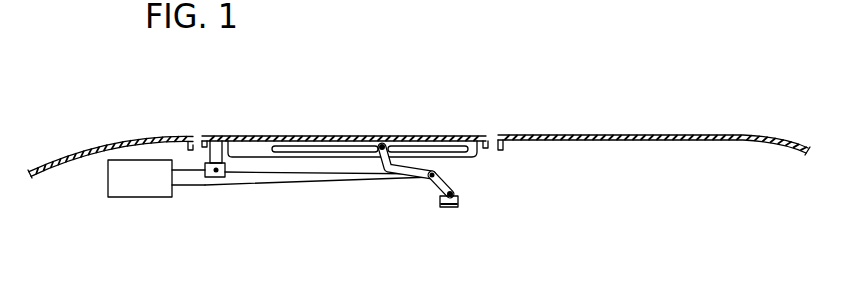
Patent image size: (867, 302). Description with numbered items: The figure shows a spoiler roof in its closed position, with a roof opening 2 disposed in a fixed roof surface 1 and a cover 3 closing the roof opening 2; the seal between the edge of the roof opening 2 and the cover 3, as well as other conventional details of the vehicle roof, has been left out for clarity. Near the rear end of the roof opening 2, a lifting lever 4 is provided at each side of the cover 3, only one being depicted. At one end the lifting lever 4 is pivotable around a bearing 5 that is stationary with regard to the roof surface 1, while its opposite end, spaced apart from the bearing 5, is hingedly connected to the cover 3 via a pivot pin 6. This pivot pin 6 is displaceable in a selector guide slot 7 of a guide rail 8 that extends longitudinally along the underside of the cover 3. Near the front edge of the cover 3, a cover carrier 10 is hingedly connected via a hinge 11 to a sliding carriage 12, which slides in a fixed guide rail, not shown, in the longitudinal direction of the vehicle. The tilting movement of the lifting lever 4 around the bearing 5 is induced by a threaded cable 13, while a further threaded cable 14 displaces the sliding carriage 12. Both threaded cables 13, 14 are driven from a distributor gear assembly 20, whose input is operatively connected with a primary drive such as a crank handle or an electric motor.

The fixed roof surface 1 is at (662, 134).
The roof opening 2 is at (494, 134).
The cover 3 is at (317, 135).
The lifting lever 4 is at (432, 183).
The bearing 5 is at (459, 198).
The pivot pin 6 is at (384, 144).
The selector guide slot 7 is at (360, 147).
The guide rail 8 is at (255, 146).
The cover carrier 10 is at (215, 138).
The hinge 11 is at (216, 178).
The sliding carriage 12 is at (224, 172).
The threaded cable 13 is at (325, 178).
The threaded cable 14 is at (190, 173).
The distributor gear assembly 20 is at (133, 198).